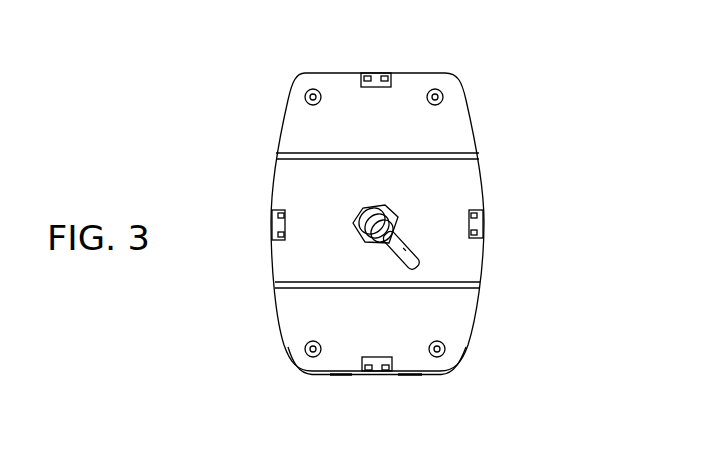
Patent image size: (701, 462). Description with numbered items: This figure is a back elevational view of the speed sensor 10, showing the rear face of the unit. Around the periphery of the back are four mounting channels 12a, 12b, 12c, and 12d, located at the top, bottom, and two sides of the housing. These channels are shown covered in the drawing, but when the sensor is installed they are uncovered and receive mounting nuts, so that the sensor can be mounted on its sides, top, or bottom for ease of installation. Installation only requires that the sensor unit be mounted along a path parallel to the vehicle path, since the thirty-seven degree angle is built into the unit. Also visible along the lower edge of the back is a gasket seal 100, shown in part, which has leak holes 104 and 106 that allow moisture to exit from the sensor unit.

The speed sensor 10 is at (500, 146).
The gasket seal 100 is at (294, 352).
The leak hole 104 is at (340, 376).
The leak hole 106 is at (412, 376).
The mounting channel 12a is at (377, 72).
The mounting channel 12b is at (484, 221).
The mounting channel 12c is at (271, 221).
The mounting channel 12d is at (382, 376).